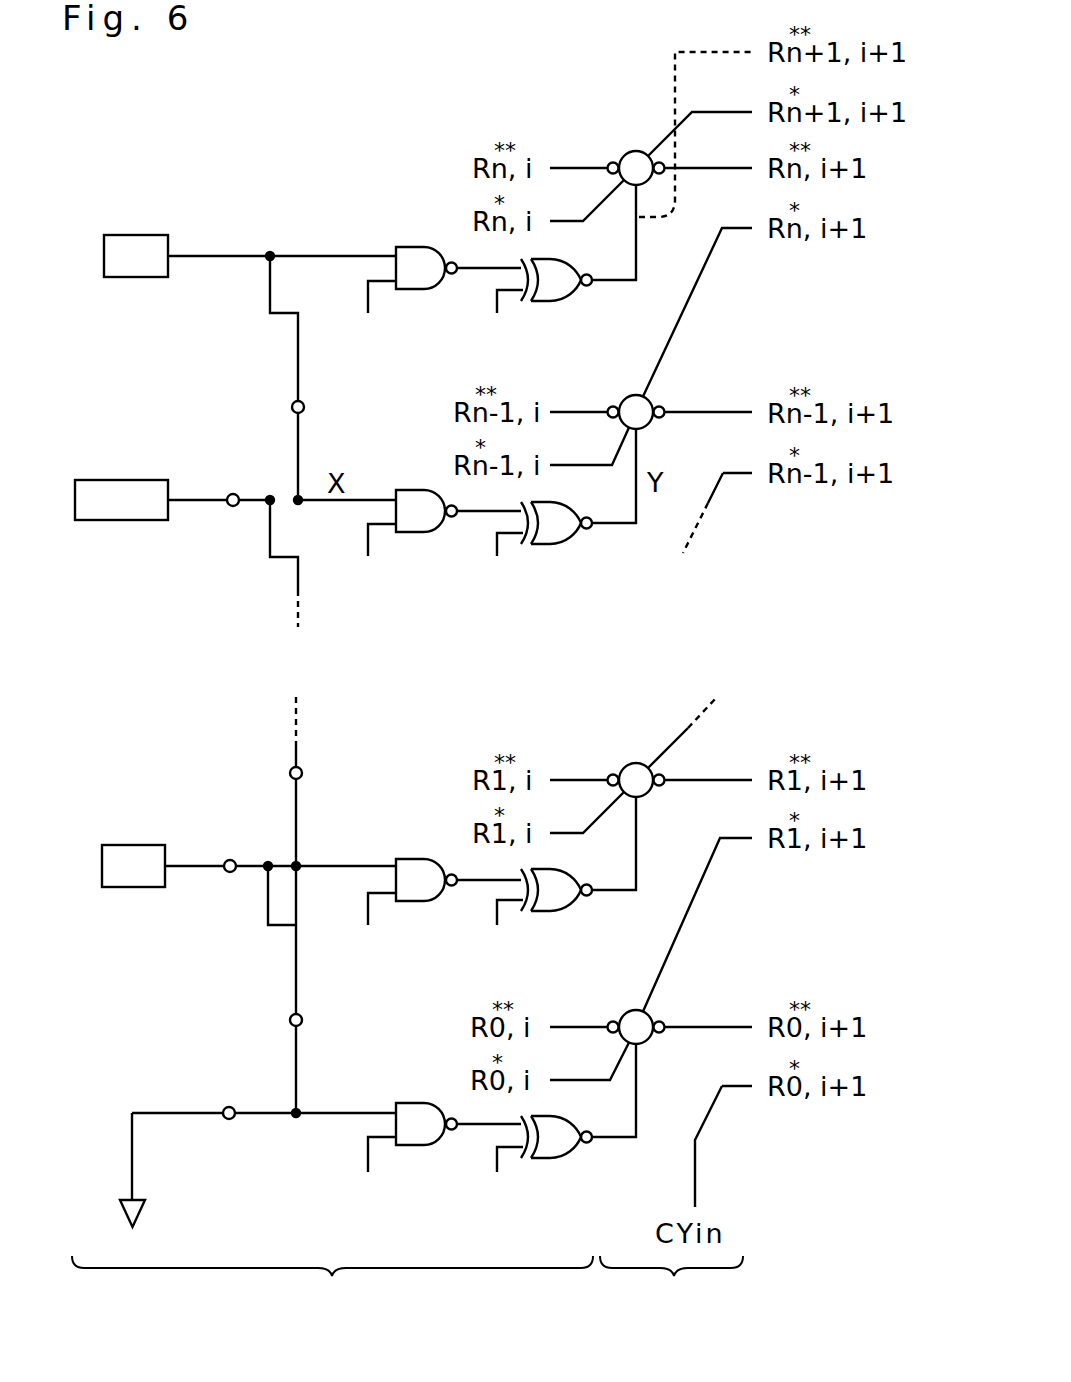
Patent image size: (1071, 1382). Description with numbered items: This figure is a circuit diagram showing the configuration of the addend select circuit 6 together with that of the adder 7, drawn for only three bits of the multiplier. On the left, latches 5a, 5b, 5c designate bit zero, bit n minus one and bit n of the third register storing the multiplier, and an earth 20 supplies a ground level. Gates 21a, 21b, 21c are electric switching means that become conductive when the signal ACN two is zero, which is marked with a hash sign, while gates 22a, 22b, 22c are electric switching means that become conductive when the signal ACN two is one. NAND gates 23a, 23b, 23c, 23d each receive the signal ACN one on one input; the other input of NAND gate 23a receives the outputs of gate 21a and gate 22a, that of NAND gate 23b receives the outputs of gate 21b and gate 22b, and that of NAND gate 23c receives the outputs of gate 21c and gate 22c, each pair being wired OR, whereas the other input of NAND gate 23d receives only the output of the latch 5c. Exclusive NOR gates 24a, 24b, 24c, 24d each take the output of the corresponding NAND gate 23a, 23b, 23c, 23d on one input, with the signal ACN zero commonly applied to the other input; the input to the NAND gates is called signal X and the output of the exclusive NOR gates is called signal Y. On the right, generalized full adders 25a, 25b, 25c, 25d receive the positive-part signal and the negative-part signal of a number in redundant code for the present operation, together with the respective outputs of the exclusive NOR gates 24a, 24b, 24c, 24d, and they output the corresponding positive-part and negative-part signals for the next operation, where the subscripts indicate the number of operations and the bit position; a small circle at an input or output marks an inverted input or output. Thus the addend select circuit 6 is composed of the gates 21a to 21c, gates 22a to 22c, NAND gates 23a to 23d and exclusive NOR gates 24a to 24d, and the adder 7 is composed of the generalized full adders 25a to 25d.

The bit 0 of third register 5a is at (143, 845).
The bit n-1 of third register 5b is at (122, 480).
The bit n of third register 5c is at (147, 235).
The earth 20 is at (132, 1160).
The gate 21a is at (229, 1119).
The gate 21b is at (230, 872).
The gate 21c is at (233, 506).
The gate 22a is at (290, 1019).
The gate 22b is at (290, 772).
The gate 22c is at (292, 406).
The NAND gate 23a is at (410, 1103).
The NAND gate 23b is at (413, 859).
The NAND gate 23c is at (410, 490).
The NAND gate 23d is at (413, 247).
The exclusive NOR gate 24a is at (566, 1158).
The exclusive NOR gate 24b is at (566, 911).
The exclusive NOR gate 24c is at (566, 544).
The exclusive NOR gate 24d is at (566, 301).
The generalized full adder 25a is at (650, 1013).
The generalized full adder 25b is at (628, 763).
The generalized full adder 25c is at (652, 398).
The generalized full adder 25d is at (630, 152).
The addend select circuit 6 is at (345, 1317).
The adder 7 is at (688, 1317).